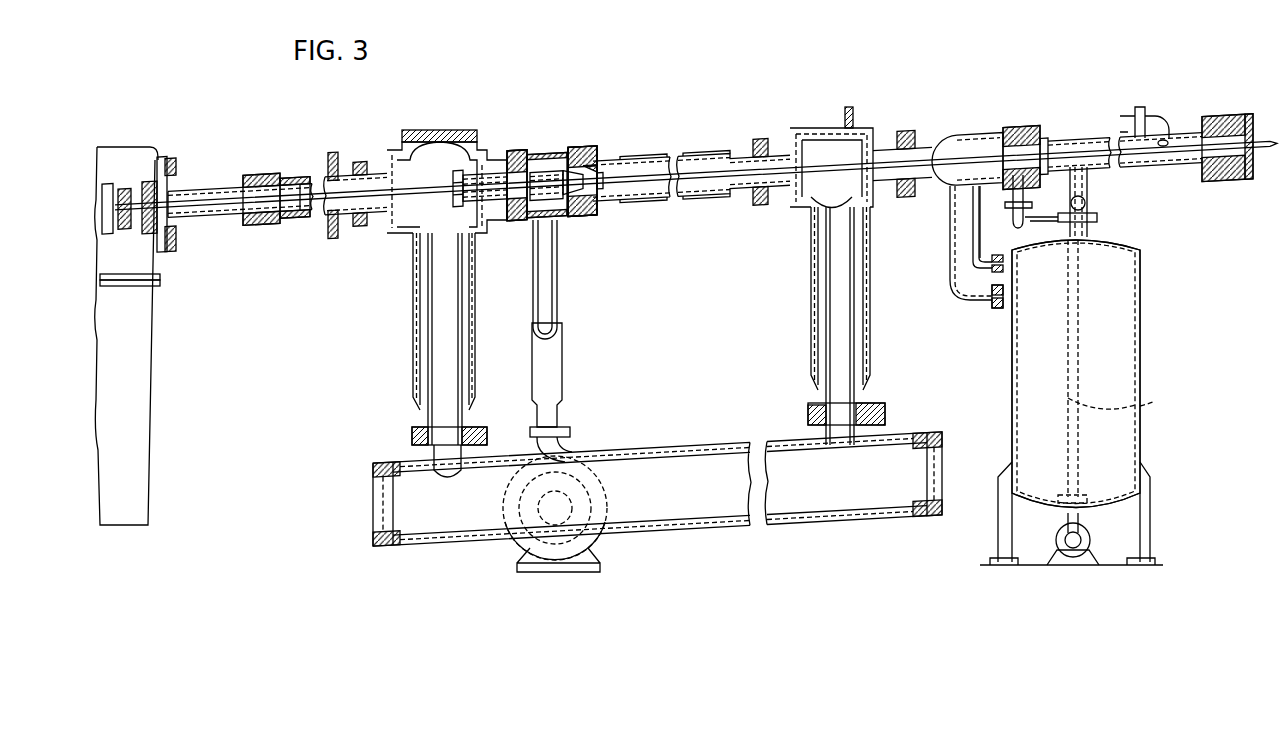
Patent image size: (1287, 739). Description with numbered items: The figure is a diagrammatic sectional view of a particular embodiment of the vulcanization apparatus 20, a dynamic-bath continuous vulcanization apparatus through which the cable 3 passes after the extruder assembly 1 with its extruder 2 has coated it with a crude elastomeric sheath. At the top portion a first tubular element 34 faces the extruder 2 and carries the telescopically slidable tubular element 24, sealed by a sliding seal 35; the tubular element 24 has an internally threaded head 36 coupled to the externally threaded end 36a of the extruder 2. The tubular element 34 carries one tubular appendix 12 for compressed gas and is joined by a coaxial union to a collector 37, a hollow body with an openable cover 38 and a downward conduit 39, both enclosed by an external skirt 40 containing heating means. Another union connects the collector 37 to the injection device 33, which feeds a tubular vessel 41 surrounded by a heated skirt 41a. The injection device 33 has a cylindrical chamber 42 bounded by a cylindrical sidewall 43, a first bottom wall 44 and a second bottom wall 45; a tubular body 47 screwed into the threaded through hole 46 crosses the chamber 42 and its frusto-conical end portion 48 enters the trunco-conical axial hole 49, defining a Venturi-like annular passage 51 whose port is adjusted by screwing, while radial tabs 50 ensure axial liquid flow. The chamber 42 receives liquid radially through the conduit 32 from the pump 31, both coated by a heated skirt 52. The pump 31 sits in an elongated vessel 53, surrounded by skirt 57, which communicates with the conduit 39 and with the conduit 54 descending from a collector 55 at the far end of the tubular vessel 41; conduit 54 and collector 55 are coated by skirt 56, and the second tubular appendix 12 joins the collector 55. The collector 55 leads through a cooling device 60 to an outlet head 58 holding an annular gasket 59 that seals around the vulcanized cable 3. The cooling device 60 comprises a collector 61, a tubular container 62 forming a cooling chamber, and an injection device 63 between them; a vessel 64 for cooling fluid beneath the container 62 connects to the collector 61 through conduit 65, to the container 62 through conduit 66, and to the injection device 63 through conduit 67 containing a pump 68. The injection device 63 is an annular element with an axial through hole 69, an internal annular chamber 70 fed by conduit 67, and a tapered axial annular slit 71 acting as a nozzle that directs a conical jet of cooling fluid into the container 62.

The extruder assembly 1 is at (99, 357).
The extruder 2 is at (107, 185).
The cable 3 is at (199, 212).
The tubular appendix 12 is at (333, 153).
The vulcanization apparatus 20 is at (607, 150).
The tubular element 24 is at (208, 192).
The pump 31 is at (593, 537).
The conduit 32 is at (565, 362).
The injection device 33 is at (577, 142).
The first tubular element 34 is at (293, 222).
The sliding seal 35 is at (275, 178).
The internally threaded head 36 is at (157, 183).
The externally threaded end 36a is at (124, 190).
The collector 37 is at (487, 143).
The cover 38 is at (440, 130).
The conduit 39 is at (462, 350).
The external skirt 40 is at (392, 148).
The tubular vessel 41 is at (650, 200).
The skirt 41a is at (703, 198).
The cylindrical chamber 42 is at (531, 172).
The cylindrical sidewall 43 is at (536, 155).
The first bottom wall 44 is at (518, 220).
The second bottom wall 45 is at (576, 222).
The threaded through hole 46 is at (506, 202).
The tubular body 47 is at (462, 197).
The frusto-conical end portion 48 is at (580, 217).
The trunco-conical axial hole 49 is at (600, 170).
The radial tabs 50 is at (573, 150).
The annular passage 51 is at (598, 148).
The external skirt 52 is at (548, 157).
The vessel 53 is at (700, 508).
The conduit 54 is at (862, 327).
The collector 55 is at (868, 118).
The skirt 56 is at (803, 127).
The skirt 57 is at (685, 452).
The outlet head 58 is at (1225, 118).
The annular gasket 59 is at (1236, 172).
The cooling device 60 is at (1128, 215).
The collector 61 is at (957, 132).
The tubular container 62 is at (1058, 137).
The injection device 63 is at (1010, 126).
The vessel 64 is at (1118, 340).
The conduit 65 is at (982, 280).
The conduit 66 is at (1157, 125).
The conduit 67 is at (1017, 213).
The pump 68 is at (1072, 558).
The axial through hole 69 is at (980, 185).
The annular chamber 70 is at (1022, 128).
The axial annular slit 71 is at (1048, 137).